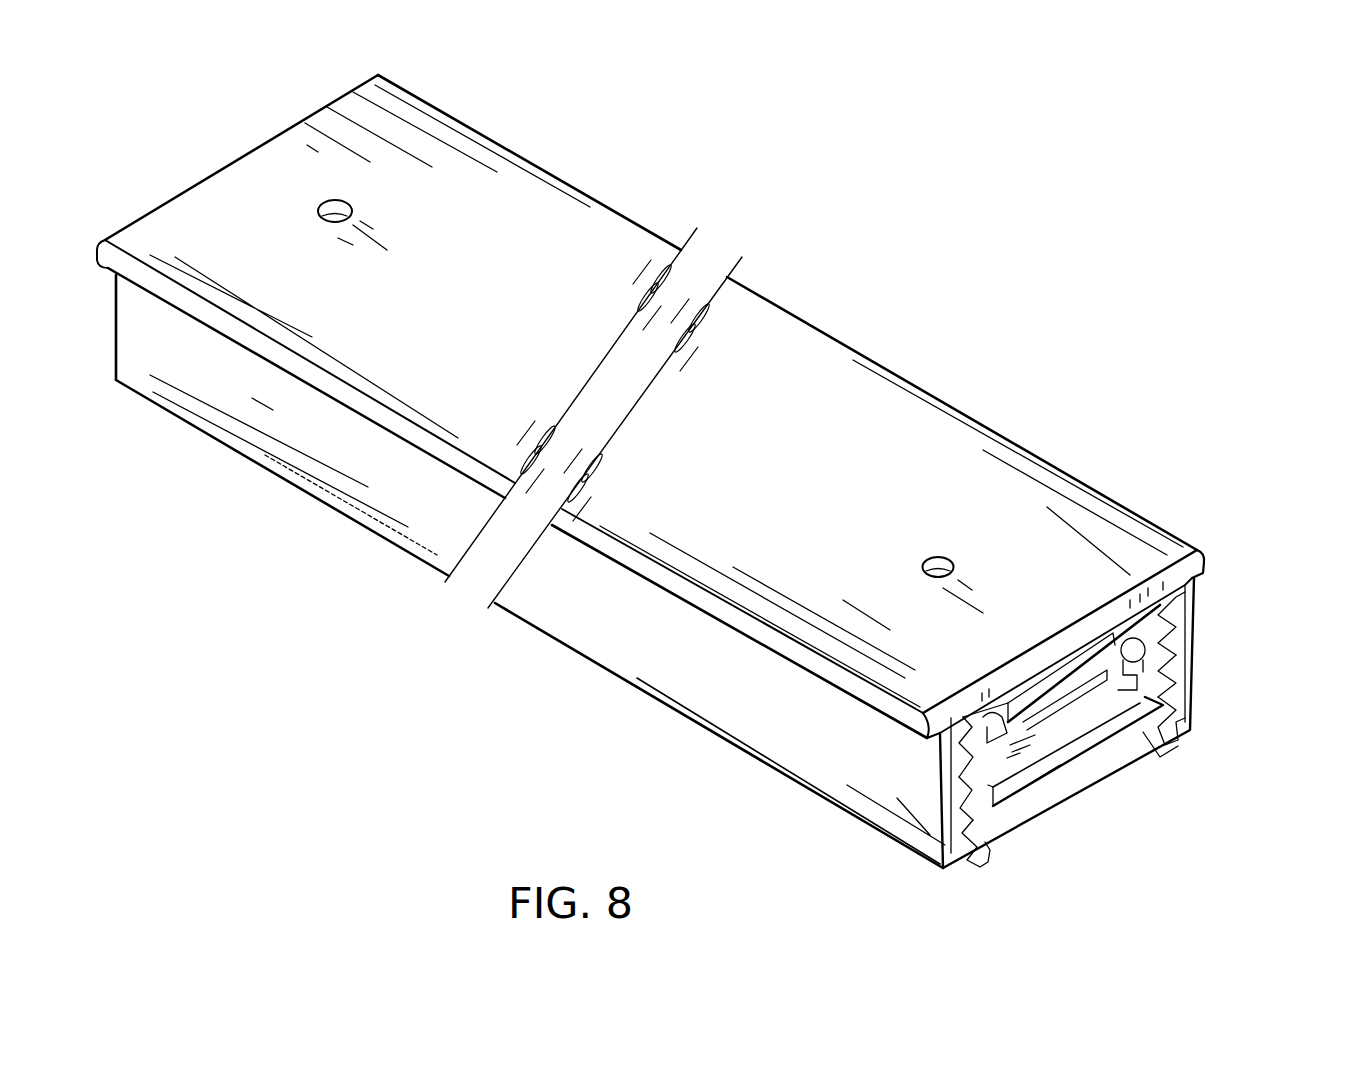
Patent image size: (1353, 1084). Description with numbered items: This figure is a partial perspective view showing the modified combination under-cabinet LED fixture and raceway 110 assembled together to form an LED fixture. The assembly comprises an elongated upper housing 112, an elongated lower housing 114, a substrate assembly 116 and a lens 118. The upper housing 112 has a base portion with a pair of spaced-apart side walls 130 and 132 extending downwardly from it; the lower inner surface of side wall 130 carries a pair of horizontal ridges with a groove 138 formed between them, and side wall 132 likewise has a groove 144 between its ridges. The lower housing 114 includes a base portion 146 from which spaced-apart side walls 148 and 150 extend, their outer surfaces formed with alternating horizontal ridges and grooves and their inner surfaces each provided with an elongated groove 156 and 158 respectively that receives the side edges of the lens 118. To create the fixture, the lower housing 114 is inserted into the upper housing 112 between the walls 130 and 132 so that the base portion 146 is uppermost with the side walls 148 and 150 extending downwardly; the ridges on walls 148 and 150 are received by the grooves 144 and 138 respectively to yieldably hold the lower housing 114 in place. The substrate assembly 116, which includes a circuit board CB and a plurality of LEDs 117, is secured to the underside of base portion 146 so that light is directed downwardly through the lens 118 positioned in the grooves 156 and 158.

The combination under-cabinet LED fixture and raceway 110 is at (714, 499).
The elongated upper housing 112 is at (970, 411).
The elongated lower housing 114 is at (1157, 655).
The substrate assembly 116 is at (1050, 707).
The LEDs 117 is at (1083, 693).
The lens 118 is at (1020, 790).
The side wall 130 is at (710, 683).
The side wall 132 is at (1190, 607).
The groove 138 is at (960, 845).
The groove 144 is at (1175, 703).
The base portion 146 is at (1033, 683).
The side wall 148 is at (1155, 692).
The side wall 150 is at (963, 822).
The elongated groove 156 is at (1190, 728).
The elongated groove 158 is at (960, 797).
The circuit board CB is at (1090, 705).